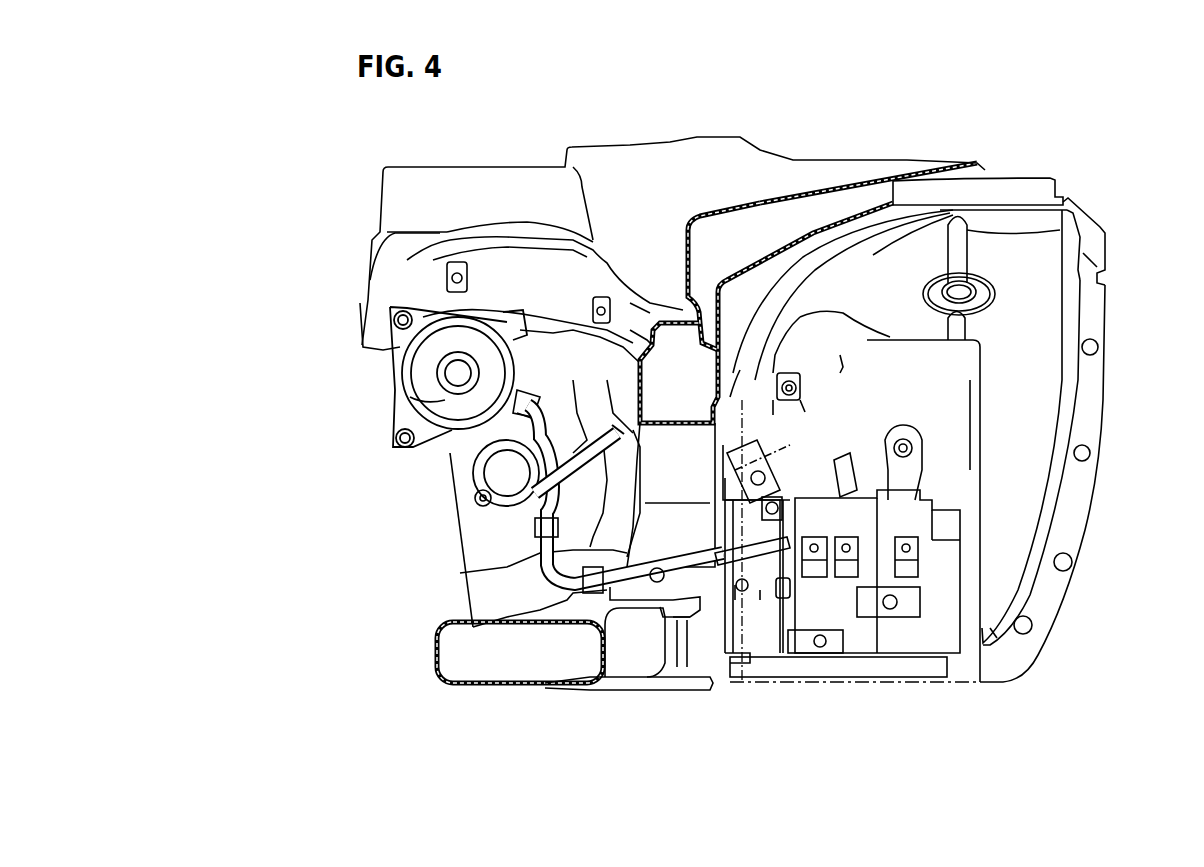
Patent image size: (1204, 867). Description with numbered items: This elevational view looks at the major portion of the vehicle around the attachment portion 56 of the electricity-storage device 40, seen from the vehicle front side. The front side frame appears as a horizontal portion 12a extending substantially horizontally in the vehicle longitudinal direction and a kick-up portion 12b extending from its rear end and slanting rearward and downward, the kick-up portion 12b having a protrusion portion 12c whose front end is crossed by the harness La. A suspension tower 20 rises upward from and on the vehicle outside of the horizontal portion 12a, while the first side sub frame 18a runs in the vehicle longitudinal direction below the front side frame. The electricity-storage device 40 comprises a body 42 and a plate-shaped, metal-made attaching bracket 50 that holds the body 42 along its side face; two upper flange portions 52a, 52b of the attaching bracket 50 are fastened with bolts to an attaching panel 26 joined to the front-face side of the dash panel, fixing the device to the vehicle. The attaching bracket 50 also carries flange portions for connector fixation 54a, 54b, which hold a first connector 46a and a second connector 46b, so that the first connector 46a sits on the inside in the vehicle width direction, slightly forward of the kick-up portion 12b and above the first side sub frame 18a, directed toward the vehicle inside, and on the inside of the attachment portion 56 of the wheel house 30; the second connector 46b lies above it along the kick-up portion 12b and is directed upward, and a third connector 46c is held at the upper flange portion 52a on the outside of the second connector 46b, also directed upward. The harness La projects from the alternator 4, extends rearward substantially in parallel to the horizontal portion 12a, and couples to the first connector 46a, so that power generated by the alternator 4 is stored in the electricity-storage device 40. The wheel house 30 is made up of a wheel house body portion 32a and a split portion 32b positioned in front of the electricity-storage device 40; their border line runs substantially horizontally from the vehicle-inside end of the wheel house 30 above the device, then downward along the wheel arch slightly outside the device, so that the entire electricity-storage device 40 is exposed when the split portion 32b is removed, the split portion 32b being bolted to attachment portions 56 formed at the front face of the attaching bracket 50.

The alternator 4 is at (430, 394).
The horizontal portion 12a is at (677, 350).
The kick-up portion 12b is at (663, 447).
The protrusion portion 12c is at (462, 574).
The first side sub frame 18a is at (528, 668).
The suspension tower 20 is at (910, 163).
The attaching panel 26 is at (960, 437).
The wheel house 30 is at (1146, 740).
The wheel house body portion 32a is at (1043, 637).
The split portion 32b is at (926, 685).
The electricity-storage device 40 is at (768, 638).
The body 42 is at (793, 668).
The first connector 46a is at (718, 537).
The second connector 46b is at (780, 407).
The third connector 46c is at (850, 455).
The attaching bracket 50 is at (960, 590).
The upper flange portion 52a is at (752, 438).
The upper flange portion 52b is at (905, 428).
The flange portion for connector fixation 54a is at (718, 549).
The flange portion for connector fixation 54b is at (740, 462).
The attachment portion 56 is at (878, 600).
The harness La is at (553, 577).